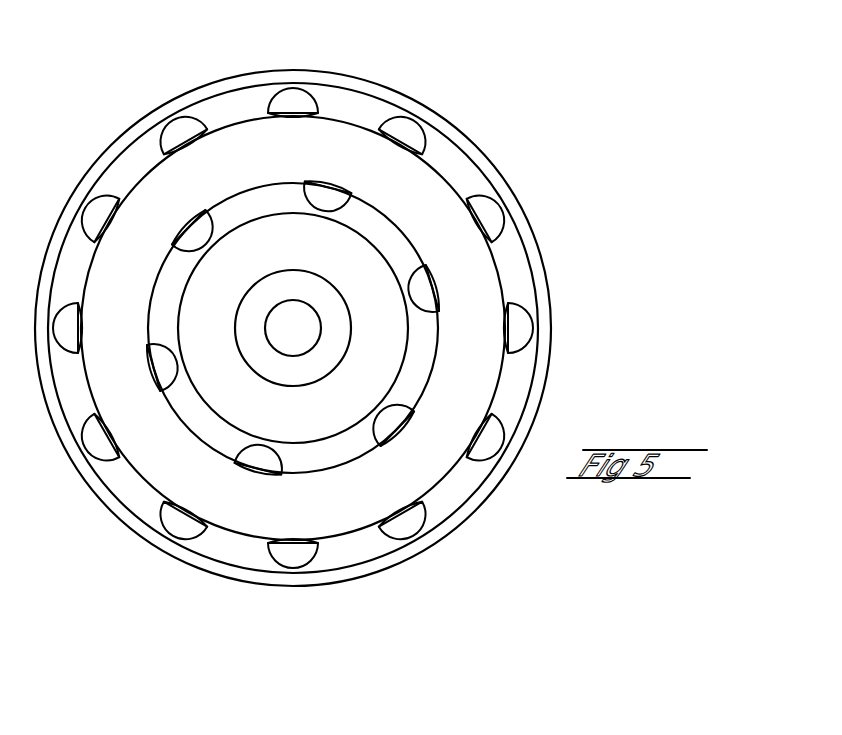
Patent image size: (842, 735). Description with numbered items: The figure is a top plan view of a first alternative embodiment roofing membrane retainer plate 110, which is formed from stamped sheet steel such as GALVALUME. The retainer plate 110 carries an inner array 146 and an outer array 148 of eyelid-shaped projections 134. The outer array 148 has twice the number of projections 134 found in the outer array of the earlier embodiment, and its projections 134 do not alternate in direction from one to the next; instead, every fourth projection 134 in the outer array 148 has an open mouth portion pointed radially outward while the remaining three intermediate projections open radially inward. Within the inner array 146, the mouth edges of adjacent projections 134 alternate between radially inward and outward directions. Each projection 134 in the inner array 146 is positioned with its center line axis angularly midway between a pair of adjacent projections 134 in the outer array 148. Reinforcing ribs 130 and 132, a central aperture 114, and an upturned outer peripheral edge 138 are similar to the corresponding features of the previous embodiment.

The roofing membrane retainer plate 110 is at (84, 106).
The central aperture 114 is at (312, 308).
The reinforcing rib 130 is at (237, 296).
The reinforcing rib 132 is at (167, 230).
The eyelid-shaped projections 134 is at (190, 126).
The upturned outer peripheral edge 138 is at (127, 513).
The inner array 146 is at (426, 240).
The outer array 148 is at (517, 290).